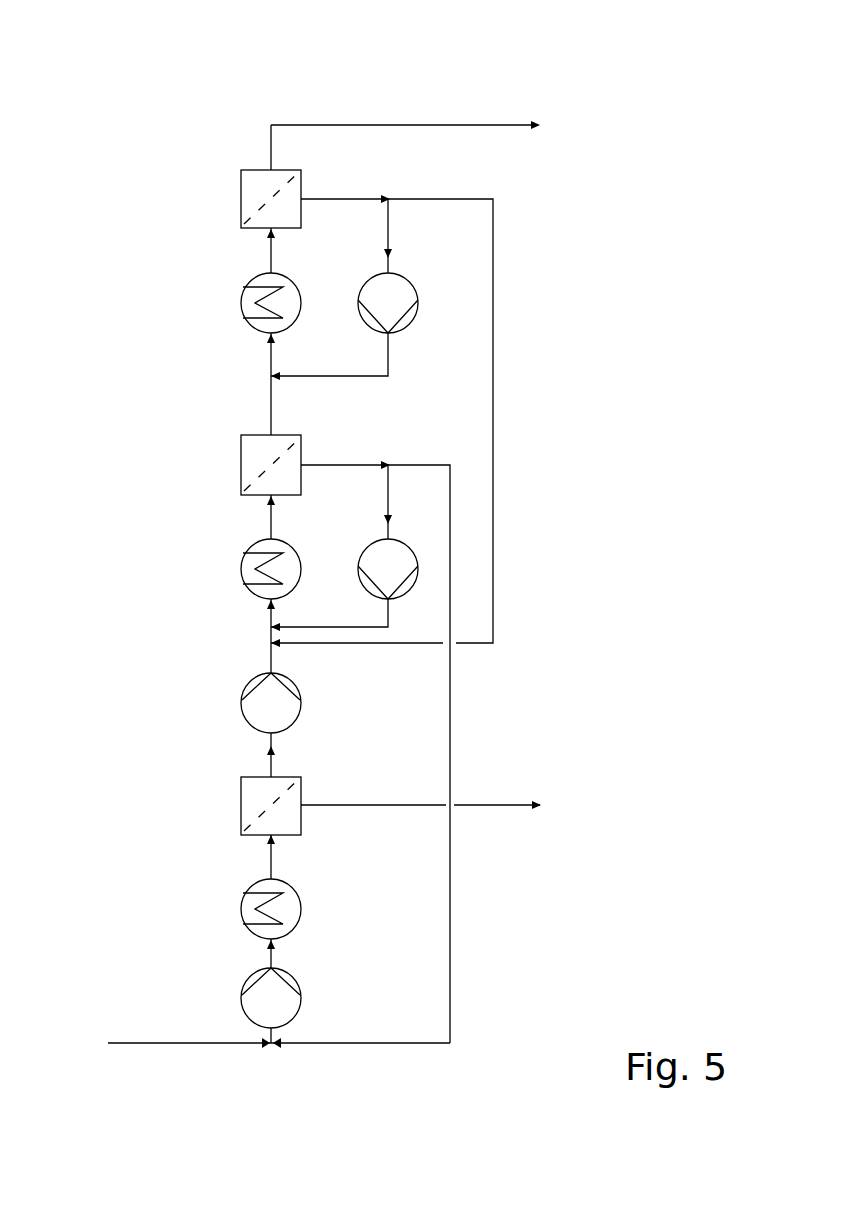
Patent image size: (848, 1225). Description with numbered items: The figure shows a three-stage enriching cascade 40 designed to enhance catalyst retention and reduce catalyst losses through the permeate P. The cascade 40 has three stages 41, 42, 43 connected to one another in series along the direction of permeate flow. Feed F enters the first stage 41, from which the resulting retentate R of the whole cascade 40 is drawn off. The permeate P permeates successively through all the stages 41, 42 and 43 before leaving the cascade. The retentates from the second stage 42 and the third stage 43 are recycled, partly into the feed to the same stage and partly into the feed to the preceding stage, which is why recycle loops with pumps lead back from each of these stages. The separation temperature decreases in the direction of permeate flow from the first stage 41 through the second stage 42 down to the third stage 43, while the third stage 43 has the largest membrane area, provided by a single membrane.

The three-stage enriching cascade 40 is at (99, 66).
The first stage 41 is at (257, 822).
The second stage 42 is at (255, 480).
The third stage 43 is at (255, 213).